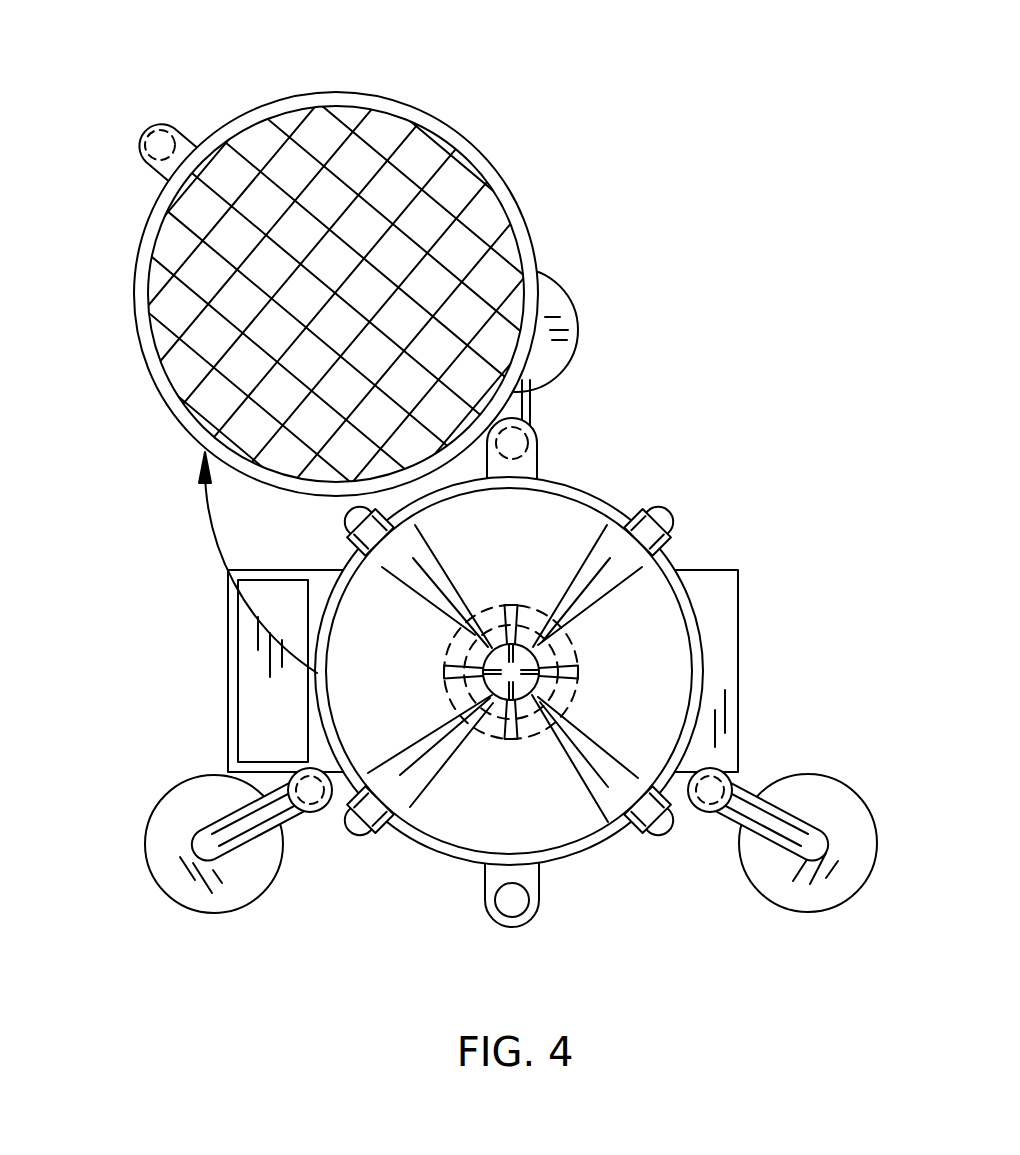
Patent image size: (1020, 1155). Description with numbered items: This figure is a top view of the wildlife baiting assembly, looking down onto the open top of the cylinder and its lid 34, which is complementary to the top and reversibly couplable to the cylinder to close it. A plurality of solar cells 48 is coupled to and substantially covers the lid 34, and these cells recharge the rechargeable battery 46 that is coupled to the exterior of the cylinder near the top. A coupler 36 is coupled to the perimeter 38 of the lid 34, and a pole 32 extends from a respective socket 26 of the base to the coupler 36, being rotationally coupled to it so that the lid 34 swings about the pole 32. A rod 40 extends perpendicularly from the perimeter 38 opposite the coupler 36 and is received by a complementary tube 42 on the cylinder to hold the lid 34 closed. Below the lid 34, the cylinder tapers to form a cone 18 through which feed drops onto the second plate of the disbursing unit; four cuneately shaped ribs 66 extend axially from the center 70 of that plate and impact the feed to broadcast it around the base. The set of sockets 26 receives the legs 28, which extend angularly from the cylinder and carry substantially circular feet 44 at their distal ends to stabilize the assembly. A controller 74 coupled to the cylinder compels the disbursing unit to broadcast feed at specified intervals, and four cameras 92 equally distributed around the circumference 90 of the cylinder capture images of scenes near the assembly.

The cone 18 is at (370, 630).
The set of sockets 26 is at (735, 790).
The set of legs 28 is at (793, 827).
The pole 32 is at (515, 443).
The lid 34 is at (449, 130).
The coupler 36 is at (518, 412).
The perimeter 38 is at (498, 168).
The rod 40 is at (160, 145).
The tube 42 is at (512, 927).
The feet 44 is at (562, 332).
The battery 46 is at (262, 677).
The solar cells 48 is at (357, 167).
The ribs 66 is at (543, 733).
The center 70 is at (505, 674).
The controller 74 is at (727, 612).
The circumference 90 is at (437, 848).
The cameras 92 is at (672, 512).